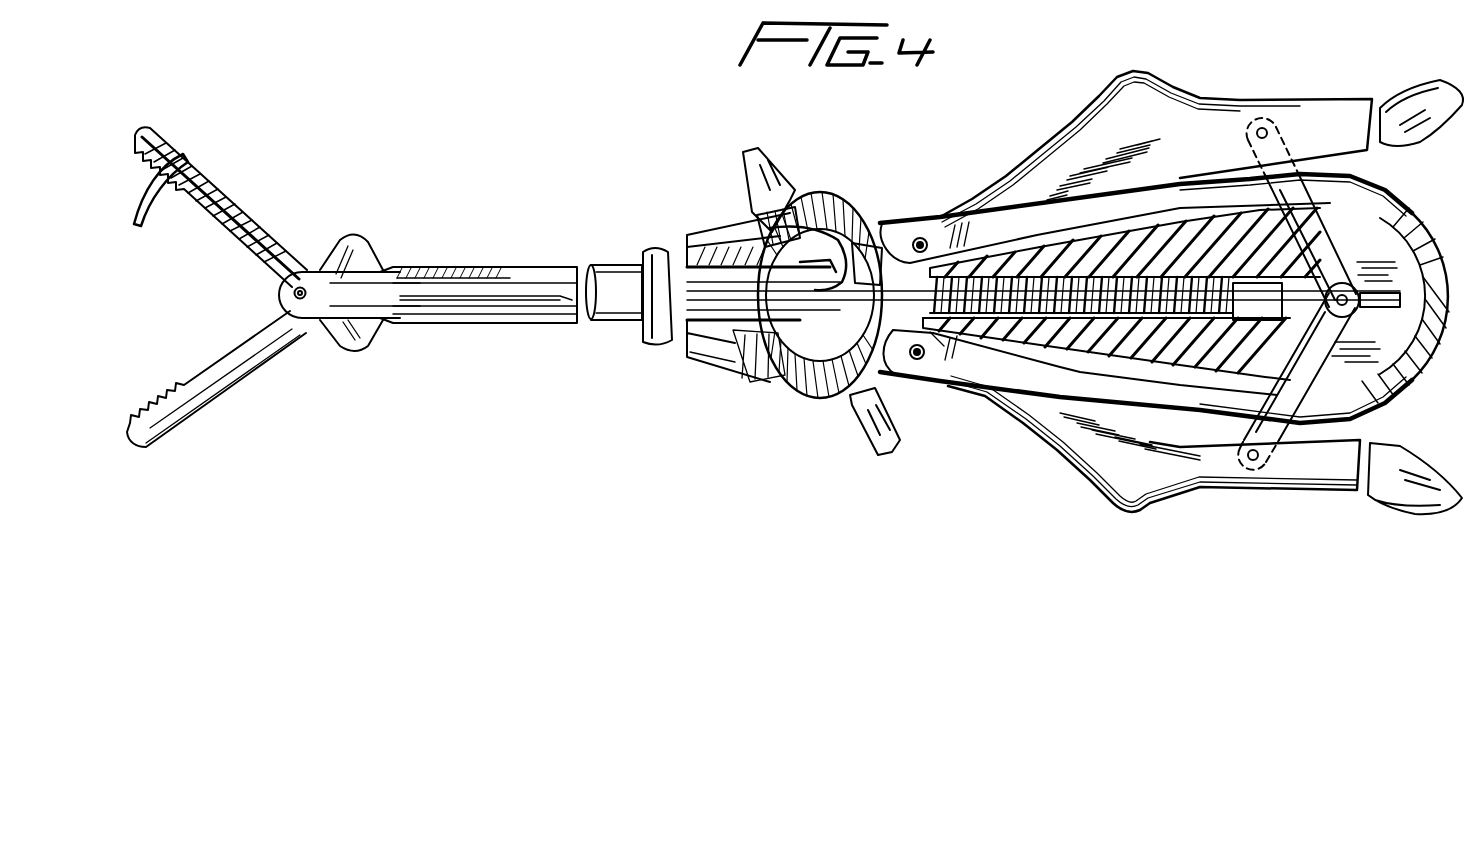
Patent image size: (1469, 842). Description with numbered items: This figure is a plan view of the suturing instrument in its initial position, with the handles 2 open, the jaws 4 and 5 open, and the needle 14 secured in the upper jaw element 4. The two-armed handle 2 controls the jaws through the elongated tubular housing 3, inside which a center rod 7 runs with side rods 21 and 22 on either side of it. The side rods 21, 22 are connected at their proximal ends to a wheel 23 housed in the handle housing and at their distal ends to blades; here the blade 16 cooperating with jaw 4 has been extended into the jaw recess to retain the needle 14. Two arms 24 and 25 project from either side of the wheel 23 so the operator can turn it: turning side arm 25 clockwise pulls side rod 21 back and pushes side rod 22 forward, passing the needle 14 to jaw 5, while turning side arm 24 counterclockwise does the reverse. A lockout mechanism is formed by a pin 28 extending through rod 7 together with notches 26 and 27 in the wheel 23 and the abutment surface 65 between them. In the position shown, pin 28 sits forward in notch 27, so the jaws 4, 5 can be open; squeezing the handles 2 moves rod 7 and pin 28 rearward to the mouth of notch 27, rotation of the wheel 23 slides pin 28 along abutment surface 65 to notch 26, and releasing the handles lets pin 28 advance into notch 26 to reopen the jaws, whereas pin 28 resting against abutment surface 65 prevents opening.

The two-armed handle 2 is at (1218, 482).
The tubular housing 3 is at (628, 262).
The upper jaw element 4 is at (212, 172).
The lower jaw element 5 is at (228, 387).
The center rod 7 is at (933, 345).
The needle 14 is at (150, 210).
The blade 16 is at (262, 214).
The side rod 21 is at (700, 230).
The side rod 22 is at (737, 363).
The wheel 23 is at (770, 242).
The side arm 24 is at (872, 433).
The side arm 25 is at (750, 153).
The notch 26 is at (874, 237).
The notch 27 is at (898, 383).
The pin 28 is at (840, 233).
The abutment surface 65 is at (923, 225).